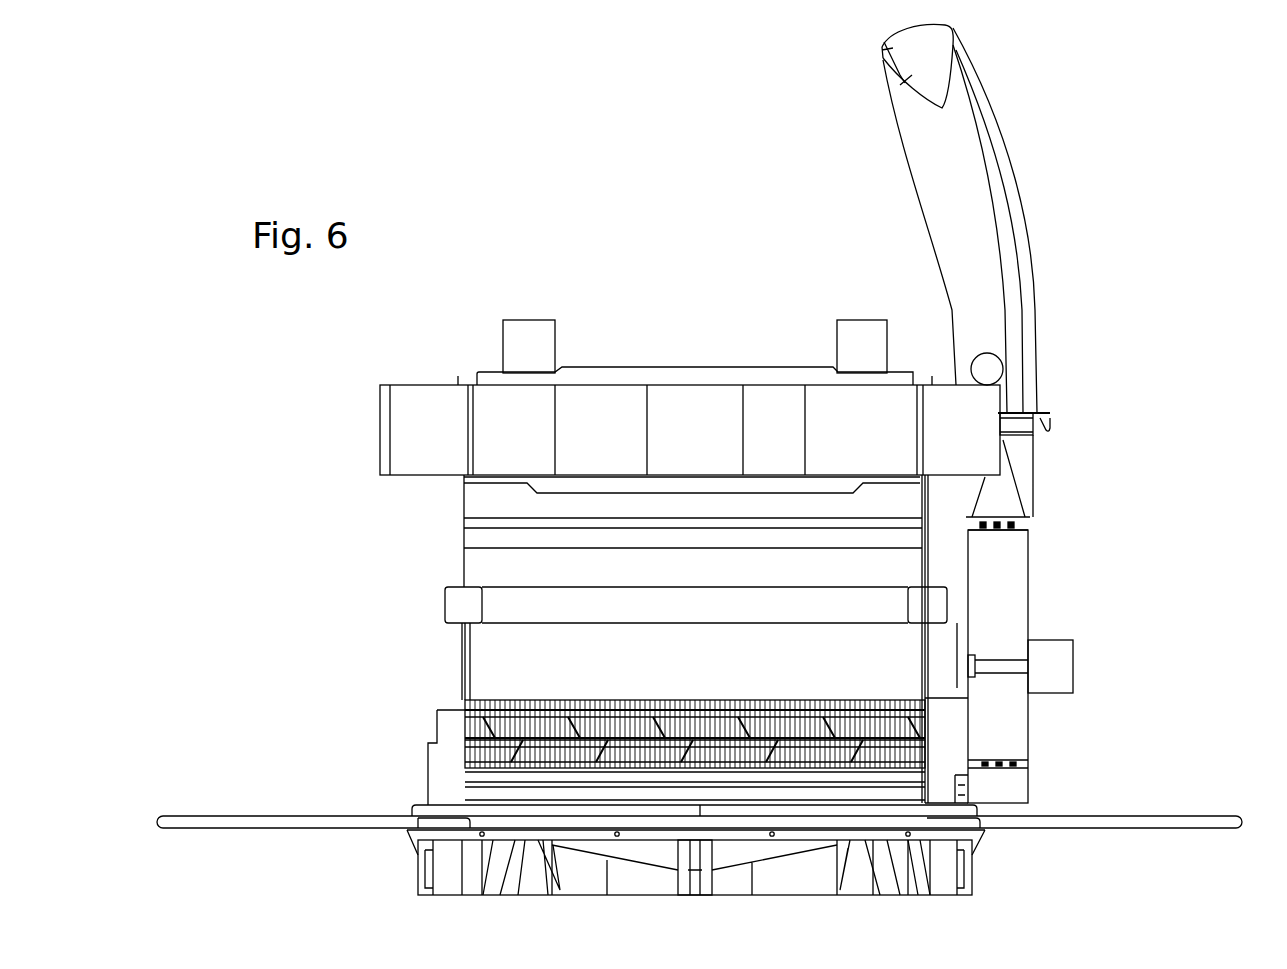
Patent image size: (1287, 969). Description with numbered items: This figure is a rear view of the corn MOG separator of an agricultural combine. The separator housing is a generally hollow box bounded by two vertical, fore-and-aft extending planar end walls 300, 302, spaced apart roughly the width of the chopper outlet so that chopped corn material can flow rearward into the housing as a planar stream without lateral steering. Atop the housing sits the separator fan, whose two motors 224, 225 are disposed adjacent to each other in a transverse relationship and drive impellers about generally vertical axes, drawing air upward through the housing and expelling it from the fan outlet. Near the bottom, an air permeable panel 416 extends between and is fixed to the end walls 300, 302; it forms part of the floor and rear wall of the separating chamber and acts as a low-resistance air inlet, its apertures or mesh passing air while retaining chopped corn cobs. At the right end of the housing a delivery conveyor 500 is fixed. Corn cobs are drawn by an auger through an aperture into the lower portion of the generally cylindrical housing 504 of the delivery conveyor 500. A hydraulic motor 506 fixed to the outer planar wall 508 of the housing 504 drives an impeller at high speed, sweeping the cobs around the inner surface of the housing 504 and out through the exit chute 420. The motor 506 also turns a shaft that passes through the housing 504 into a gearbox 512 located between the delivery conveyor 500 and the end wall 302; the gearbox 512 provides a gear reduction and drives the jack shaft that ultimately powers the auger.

The motor 224 is at (531, 320).
The motor 225 is at (852, 322).
The end wall 300 is at (464, 557).
The end wall 302 is at (928, 542).
The air permeable panel 416 is at (465, 700).
The exit chute 420 is at (1005, 158).
The delivery conveyor 500 is at (1112, 722).
The housing 504 is at (1007, 737).
The hydraulic motor 506 is at (1057, 643).
The outer planar wall 508 is at (1028, 580).
The gearbox 512 is at (943, 753).